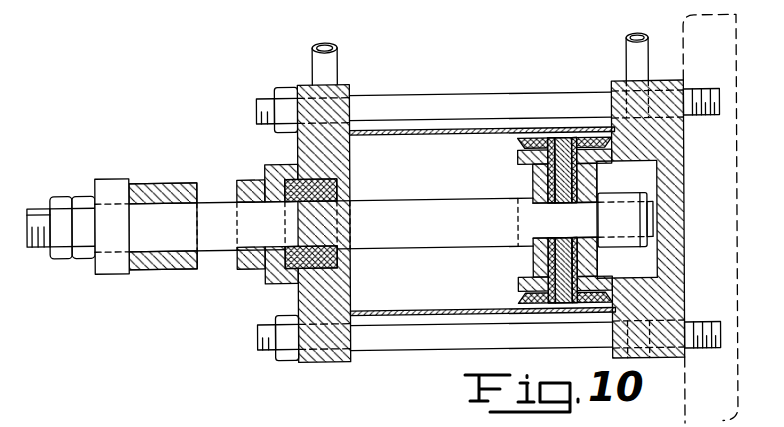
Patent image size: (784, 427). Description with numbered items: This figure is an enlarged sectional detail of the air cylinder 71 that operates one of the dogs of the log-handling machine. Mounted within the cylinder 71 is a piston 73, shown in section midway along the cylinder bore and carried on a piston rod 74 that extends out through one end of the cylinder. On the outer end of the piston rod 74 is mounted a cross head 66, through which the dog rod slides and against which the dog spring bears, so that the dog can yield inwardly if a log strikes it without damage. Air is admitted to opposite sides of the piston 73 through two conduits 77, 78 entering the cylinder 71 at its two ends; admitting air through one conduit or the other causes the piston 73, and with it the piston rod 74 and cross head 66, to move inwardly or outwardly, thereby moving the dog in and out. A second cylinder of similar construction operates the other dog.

The cross head 66 is at (113, 270).
The air cylinder 71 is at (457, 130).
The piston 73 is at (522, 174).
The piston rod 74 is at (408, 210).
The conduit 77 is at (340, 64).
The conduit 78 is at (628, 42).